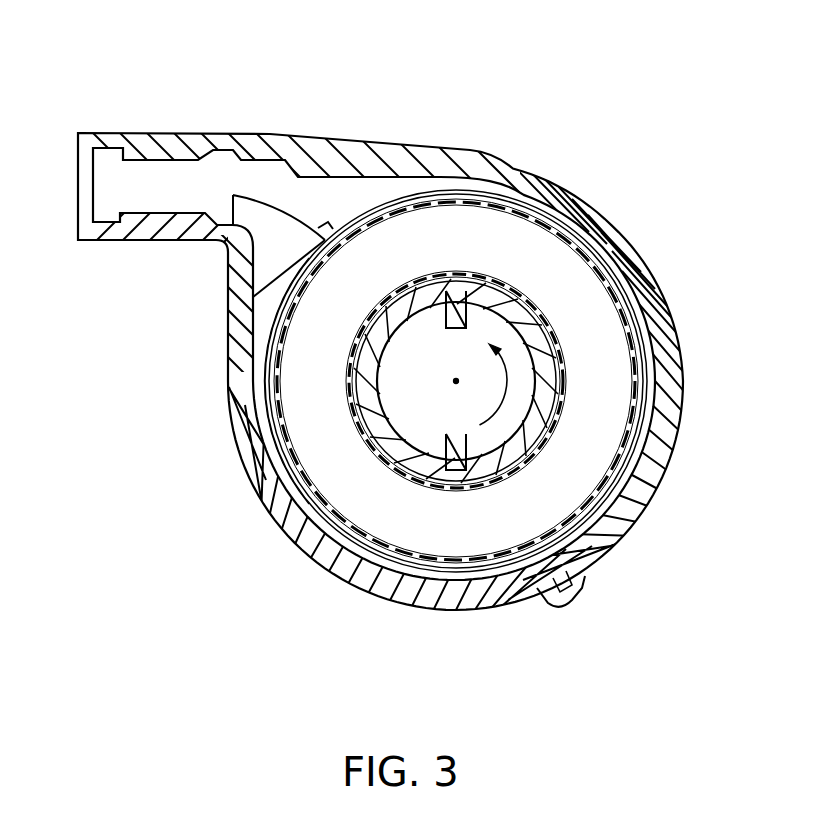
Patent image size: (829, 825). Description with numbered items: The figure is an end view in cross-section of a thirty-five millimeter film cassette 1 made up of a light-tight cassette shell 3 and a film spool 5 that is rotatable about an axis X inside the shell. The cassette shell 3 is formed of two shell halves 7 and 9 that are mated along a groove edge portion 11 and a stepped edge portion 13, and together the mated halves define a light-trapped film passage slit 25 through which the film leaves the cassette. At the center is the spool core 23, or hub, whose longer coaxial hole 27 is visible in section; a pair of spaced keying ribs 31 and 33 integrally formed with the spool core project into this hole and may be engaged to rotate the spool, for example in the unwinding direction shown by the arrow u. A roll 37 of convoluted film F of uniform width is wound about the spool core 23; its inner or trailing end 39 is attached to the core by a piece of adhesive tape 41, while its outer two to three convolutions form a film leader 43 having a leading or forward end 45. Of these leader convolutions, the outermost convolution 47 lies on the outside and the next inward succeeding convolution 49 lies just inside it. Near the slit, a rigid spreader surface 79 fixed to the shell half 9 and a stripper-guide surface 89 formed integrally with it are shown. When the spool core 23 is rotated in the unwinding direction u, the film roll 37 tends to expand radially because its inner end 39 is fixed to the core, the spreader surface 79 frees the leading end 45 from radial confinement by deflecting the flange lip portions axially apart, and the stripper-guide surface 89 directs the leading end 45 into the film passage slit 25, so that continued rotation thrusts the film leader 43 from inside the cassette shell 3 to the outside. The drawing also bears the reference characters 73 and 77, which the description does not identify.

The film cassette 1 is at (236, 113).
The cassette shell 3 is at (653, 527).
The film spool 5 is at (672, 398).
The shell half 7 is at (421, 150).
The shell half 9 is at (461, 614).
The groove edge portion 11 is at (557, 603).
The stepped edge portion 13 is at (545, 575).
The spool core 23 is at (523, 346).
The film passage slit 25 is at (133, 192).
The longer coaxial hole 27 is at (548, 328).
The keying rib 31 is at (455, 322).
The keying rib 33 is at (455, 440).
The film roll 37 is at (286, 490).
The trailing end 39 is at (352, 408).
The adhesive tape 41 is at (360, 383).
The film leader 43 is at (382, 196).
The leading end 45 is at (328, 216).
The outermost convolution 47 is at (582, 240).
The next inward succeeding convolution 49 is at (604, 270).
The side wall 73 is at (259, 400).
The back wall arc 77 is at (260, 368).
The spreader surface 79 is at (277, 246).
The stripper-guide surface 89 is at (276, 208).
The axis X is at (452, 381).
The unwinding direction u is at (488, 353).
The film F is at (385, 536).